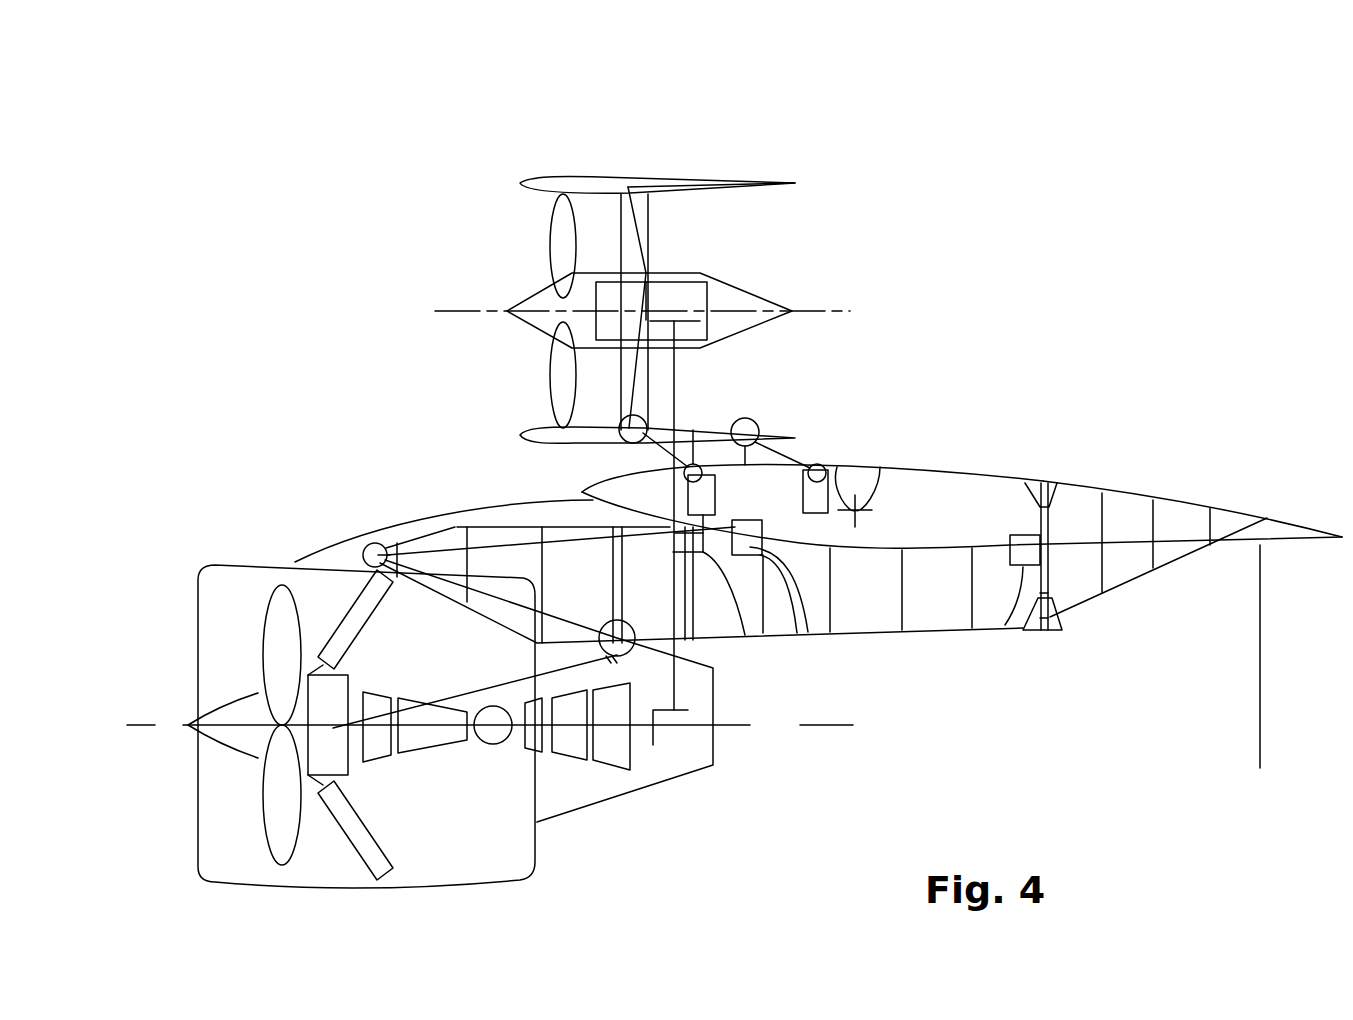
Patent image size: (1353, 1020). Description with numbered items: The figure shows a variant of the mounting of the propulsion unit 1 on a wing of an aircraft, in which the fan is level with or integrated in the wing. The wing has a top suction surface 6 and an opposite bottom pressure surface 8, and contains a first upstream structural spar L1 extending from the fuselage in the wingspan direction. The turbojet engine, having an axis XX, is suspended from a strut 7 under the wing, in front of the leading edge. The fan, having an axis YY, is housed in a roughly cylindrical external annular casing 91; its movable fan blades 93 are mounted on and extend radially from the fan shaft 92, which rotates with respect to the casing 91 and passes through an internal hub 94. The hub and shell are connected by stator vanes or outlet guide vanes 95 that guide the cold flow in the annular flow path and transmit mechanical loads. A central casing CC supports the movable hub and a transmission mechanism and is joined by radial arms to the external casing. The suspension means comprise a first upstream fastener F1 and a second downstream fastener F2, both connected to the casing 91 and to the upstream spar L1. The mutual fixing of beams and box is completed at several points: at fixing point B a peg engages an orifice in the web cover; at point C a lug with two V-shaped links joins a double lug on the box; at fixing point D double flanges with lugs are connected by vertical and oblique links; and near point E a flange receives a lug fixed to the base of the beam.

The propulsion unit 1 is at (958, 495).
The suction surface 6 is at (1005, 477).
The strut 7 is at (862, 587).
The pressure surface 8 is at (1262, 671).
The casing 91 is at (580, 178).
The fan shaft 92 is at (562, 312).
The movable fan blades 93 is at (563, 236).
The internal hub 94 is at (545, 306).
The outlet guide vanes 95 is at (643, 207).
The fixing point B is at (805, 618).
The point C is at (985, 588).
The fixing point D is at (1043, 490).
The point E is at (1052, 630).
The first upstream fastener F1 is at (700, 465).
The second downstream fastener F2 is at (823, 468).
The first upstream structural spar L1 is at (712, 498).
The central casing CC is at (690, 270).
The axis YY is at (843, 303).
The axis XX is at (812, 727).